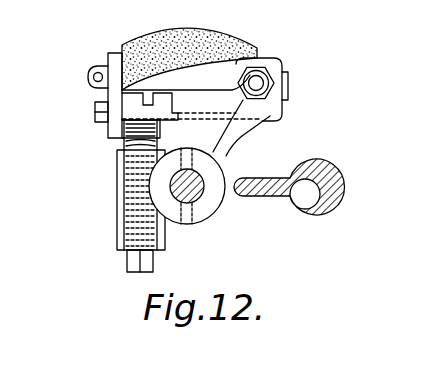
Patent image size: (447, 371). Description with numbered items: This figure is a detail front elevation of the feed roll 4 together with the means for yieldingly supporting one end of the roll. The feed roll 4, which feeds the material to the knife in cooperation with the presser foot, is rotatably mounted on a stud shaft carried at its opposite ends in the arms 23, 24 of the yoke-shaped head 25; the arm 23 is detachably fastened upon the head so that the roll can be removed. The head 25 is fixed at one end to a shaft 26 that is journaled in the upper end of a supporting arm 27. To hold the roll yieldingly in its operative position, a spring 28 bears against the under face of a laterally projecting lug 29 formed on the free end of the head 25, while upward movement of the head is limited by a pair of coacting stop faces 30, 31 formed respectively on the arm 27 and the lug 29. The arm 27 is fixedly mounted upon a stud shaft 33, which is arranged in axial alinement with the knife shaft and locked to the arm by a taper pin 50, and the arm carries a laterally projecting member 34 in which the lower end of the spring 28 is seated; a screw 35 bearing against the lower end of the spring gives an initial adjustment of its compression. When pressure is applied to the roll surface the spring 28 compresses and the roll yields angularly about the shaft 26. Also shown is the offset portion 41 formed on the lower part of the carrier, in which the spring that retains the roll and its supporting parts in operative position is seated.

The feed roll 4 is at (214, 46).
The arm 23 is at (113, 61).
The arm 24 is at (262, 80).
The yoke-shaped head 25 is at (234, 85).
The shaft 26 is at (272, 78).
The supporting arm 27 is at (268, 119).
The spring 28 is at (125, 143).
The lug 29 is at (134, 103).
The stop face 30 is at (175, 88).
The stop face 31 is at (230, 142).
The stud shaft 33 is at (206, 196).
The laterally projecting member 34 is at (117, 200).
The screw 35 is at (127, 255).
The offset portion 41 is at (330, 184).
The taper pin 50 is at (186, 205).